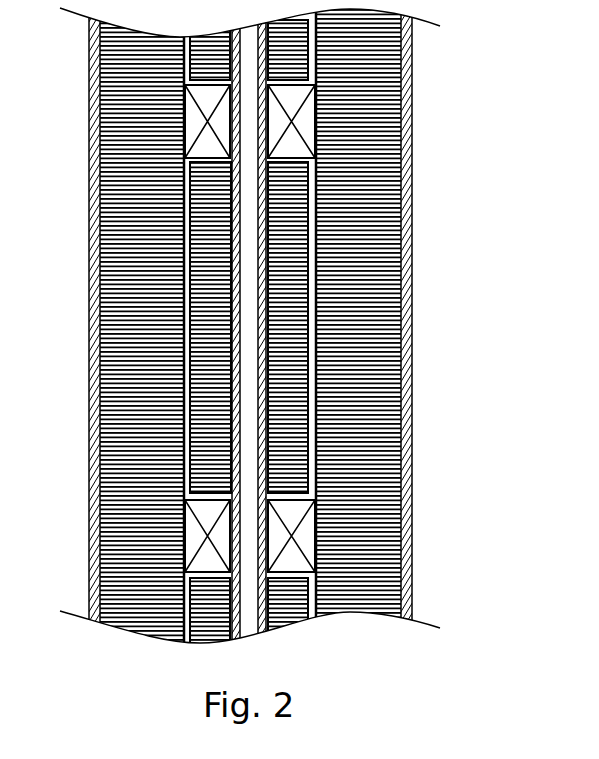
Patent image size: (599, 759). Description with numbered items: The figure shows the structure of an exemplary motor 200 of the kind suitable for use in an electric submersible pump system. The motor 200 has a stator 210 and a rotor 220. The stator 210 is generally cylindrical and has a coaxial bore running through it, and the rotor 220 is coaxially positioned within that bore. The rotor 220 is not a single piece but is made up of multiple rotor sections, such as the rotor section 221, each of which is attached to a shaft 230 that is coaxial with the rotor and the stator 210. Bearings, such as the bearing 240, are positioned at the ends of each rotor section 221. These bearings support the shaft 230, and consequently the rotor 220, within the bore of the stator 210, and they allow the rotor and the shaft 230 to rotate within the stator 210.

The downhole system 200 is at (438, 208).
The stator 210 is at (404, 84).
The rotor 220 is at (305, 308).
The rotor section 221 is at (178, 171).
The shaft 230 is at (287, 619).
The bearing 240 is at (316, 131).